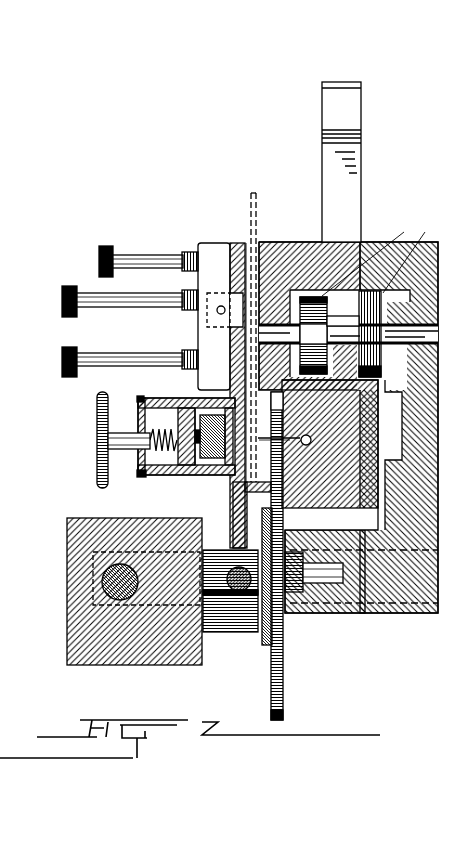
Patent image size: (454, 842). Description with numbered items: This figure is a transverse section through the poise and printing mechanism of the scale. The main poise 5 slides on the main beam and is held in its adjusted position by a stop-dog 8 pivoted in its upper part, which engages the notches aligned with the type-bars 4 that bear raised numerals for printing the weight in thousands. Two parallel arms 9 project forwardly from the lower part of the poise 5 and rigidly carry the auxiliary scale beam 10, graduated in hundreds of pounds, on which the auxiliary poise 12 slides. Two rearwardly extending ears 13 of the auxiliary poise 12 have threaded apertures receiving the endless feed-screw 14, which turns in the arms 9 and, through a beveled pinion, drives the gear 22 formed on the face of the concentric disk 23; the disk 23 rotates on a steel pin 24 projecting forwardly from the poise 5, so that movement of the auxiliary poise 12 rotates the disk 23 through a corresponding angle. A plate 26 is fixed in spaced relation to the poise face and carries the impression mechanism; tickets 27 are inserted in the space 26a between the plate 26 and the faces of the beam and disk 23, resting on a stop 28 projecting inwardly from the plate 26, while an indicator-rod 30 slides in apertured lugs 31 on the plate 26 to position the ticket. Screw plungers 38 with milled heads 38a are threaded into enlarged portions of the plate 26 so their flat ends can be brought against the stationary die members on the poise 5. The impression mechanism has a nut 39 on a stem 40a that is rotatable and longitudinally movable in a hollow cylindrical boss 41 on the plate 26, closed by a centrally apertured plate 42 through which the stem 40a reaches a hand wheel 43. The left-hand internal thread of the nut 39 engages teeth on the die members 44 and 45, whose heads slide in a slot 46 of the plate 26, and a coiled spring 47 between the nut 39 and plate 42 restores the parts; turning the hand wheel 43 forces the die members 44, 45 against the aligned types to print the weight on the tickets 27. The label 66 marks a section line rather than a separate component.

The main poise 5 is at (375, 604).
The stop-dog 8 is at (362, 207).
The parallel arms 9 is at (112, 441).
The auxiliary scale beam 10 is at (104, 576).
The auxiliary poise 12 is at (68, 657).
The rearwardly extending ears 13 is at (226, 628).
The endless feed-screw 14 is at (252, 647).
The bevel gear 22 is at (270, 521).
The disk 23 is at (285, 659).
The steel pin 24 is at (333, 590).
The plate 26 is at (233, 242).
The space 26a is at (252, 232).
The tickets 27 is at (258, 230).
The stop 28 is at (232, 468).
The indicator-rod 30 is at (217, 311).
The apertured lugs 31 is at (207, 243).
The screw plunger 38 is at (123, 258).
The milled head 38a is at (62, 352).
The nut 39 is at (148, 455).
The stem 40a is at (116, 425).
The hollow cylindrical boss 41 is at (177, 405).
The centrally apertured plate 42 is at (97, 466).
The hand wheel 43 is at (97, 410).
The die member 44 is at (212, 398).
The die member 45 is at (180, 475).
The slot 46 is at (240, 490).
The coiled spring 47 is at (164, 402).
The gears 66 is at (364, 294).
The type-bars 4 is at (4, 384).